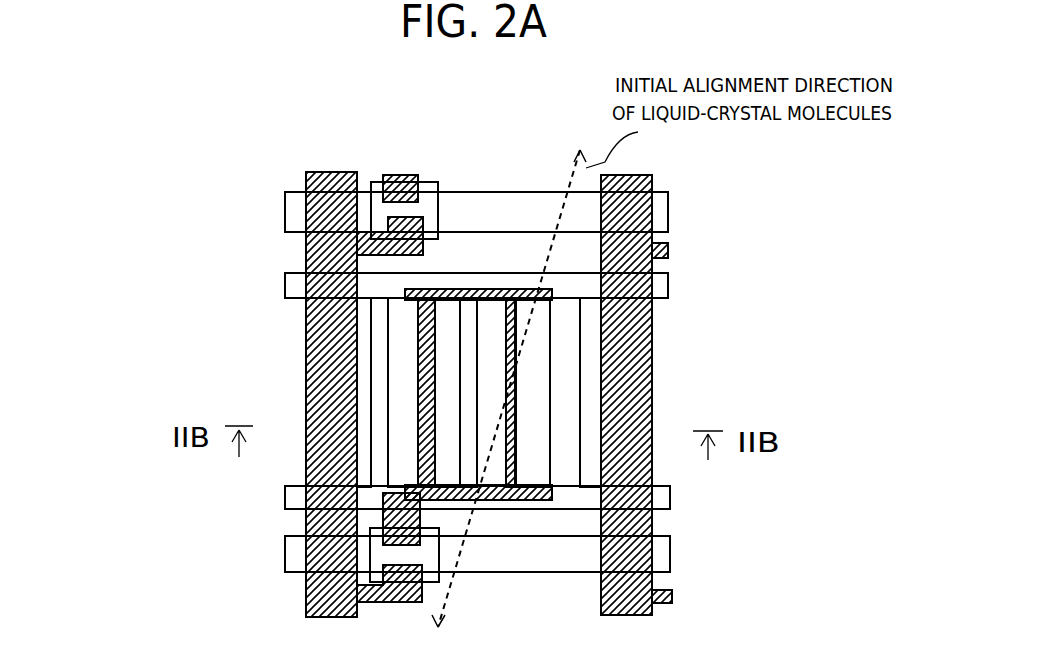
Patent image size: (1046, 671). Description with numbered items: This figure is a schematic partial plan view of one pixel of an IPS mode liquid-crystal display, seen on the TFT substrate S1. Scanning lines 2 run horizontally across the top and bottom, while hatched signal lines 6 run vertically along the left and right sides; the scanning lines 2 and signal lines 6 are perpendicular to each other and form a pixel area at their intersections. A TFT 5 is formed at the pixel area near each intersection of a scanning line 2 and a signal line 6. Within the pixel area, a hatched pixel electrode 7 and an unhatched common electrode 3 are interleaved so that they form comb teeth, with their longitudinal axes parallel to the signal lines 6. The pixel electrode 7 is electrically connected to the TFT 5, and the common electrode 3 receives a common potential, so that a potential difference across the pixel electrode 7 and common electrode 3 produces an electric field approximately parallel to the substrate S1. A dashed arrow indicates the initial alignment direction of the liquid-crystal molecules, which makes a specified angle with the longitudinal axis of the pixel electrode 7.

The scanning line 2 is at (667, 213).
The common electrode 3 is at (667, 287).
The TFT 5 is at (437, 208).
The signal line 6 is at (323, 343).
The pixel electrode 7 is at (483, 288).
The TFT substrate S1 is at (328, 160).